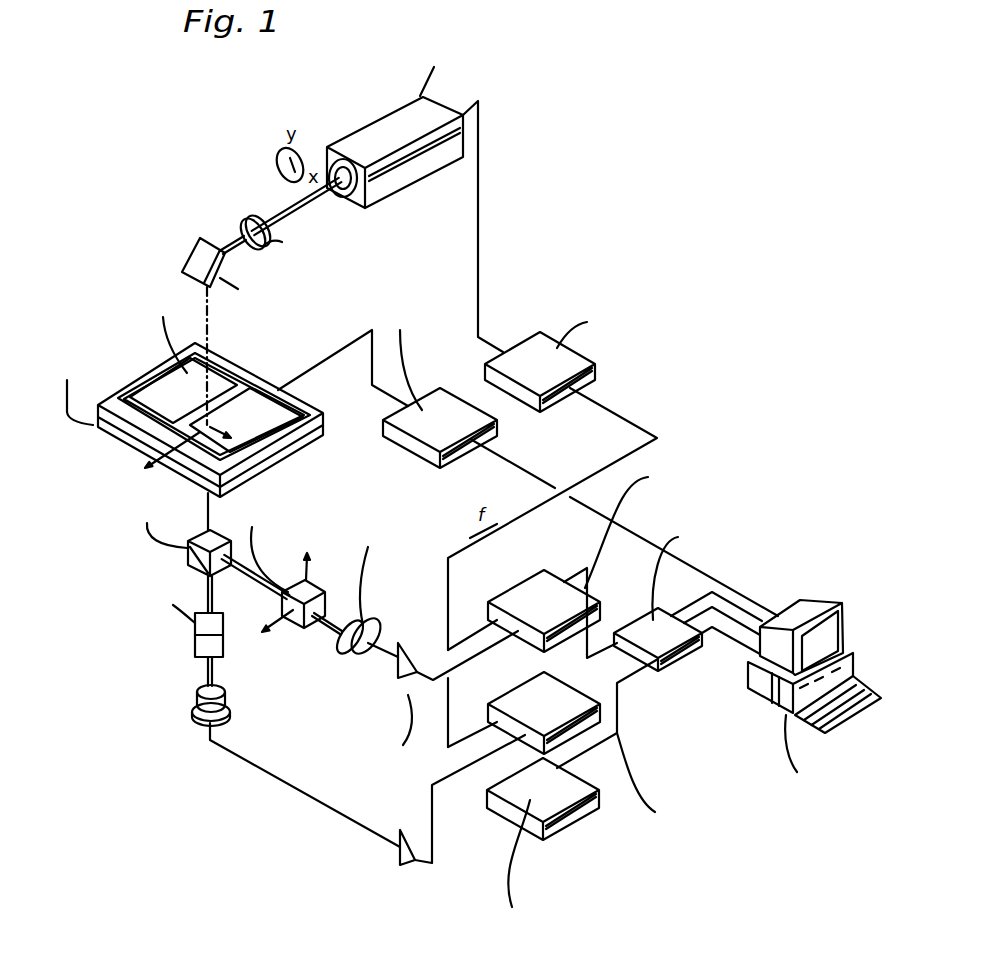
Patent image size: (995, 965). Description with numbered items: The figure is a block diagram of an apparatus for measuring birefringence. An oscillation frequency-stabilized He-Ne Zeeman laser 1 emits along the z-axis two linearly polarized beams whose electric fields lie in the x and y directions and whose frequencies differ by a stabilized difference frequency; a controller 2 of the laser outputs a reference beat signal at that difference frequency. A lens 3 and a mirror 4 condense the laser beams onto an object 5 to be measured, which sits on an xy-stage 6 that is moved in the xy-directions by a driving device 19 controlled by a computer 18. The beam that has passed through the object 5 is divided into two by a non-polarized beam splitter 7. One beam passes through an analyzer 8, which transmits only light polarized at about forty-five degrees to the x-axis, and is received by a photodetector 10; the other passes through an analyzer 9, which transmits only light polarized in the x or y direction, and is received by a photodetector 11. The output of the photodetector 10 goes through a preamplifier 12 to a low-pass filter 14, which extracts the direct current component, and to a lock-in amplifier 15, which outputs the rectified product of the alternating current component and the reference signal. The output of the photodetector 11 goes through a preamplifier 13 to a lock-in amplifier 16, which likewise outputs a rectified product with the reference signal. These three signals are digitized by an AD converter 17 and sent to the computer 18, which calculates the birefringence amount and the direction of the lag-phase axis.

The oscillation frequency-stabilized Zeeman laser 1 is at (372, 120).
The controller 2 is at (540, 333).
The lens 3 is at (240, 222).
The mirror 4 is at (193, 254).
The object 5 is at (170, 380).
The xy-stage 6 is at (138, 455).
The non-polarized beam splitter 7 is at (187, 558).
The analyzer 8 is at (195, 637).
The analyzer 9 is at (292, 627).
The photodetector 10 is at (192, 703).
The photodetector 11 is at (350, 645).
The preamplifier 12 is at (398, 868).
The preamplifier 13 is at (405, 668).
The low-pass filter 14 is at (580, 817).
The lock-in amplifier 15 is at (578, 725).
The lock-in amplifier 16 is at (557, 573).
The AD converter 17 is at (683, 657).
The computer 18 is at (772, 702).
The driving device 19 is at (438, 392).